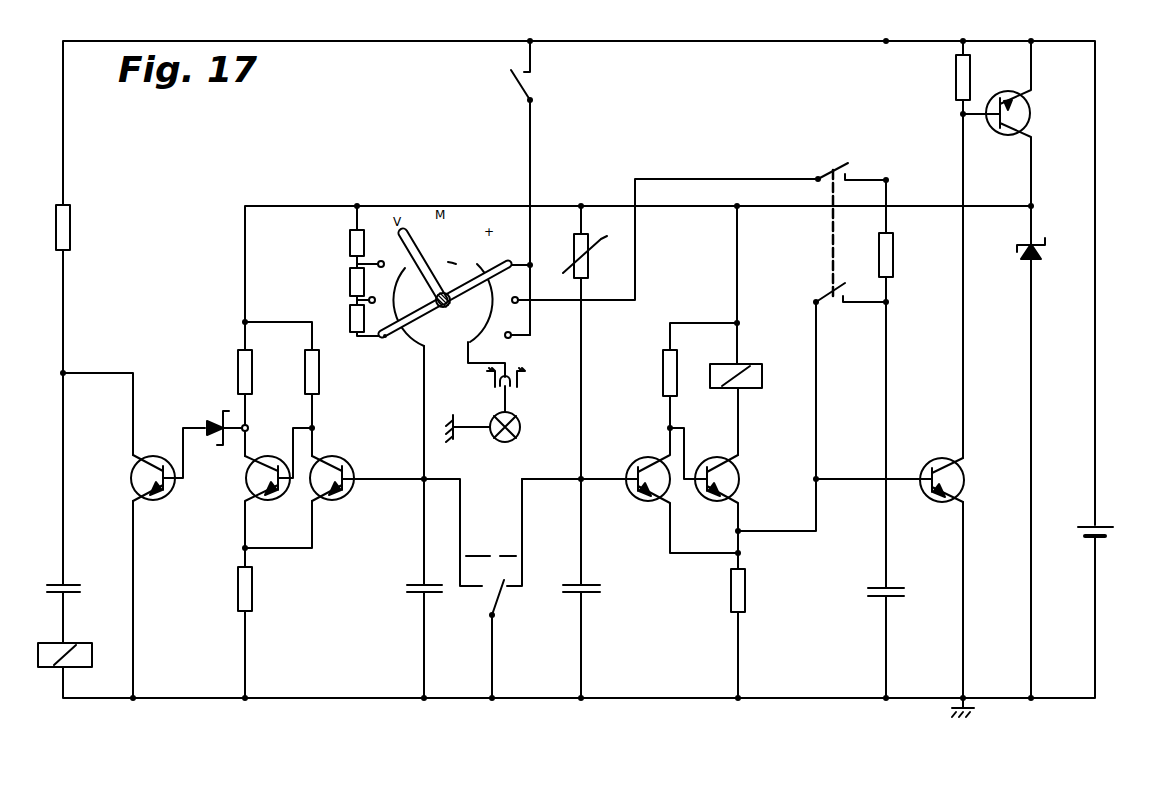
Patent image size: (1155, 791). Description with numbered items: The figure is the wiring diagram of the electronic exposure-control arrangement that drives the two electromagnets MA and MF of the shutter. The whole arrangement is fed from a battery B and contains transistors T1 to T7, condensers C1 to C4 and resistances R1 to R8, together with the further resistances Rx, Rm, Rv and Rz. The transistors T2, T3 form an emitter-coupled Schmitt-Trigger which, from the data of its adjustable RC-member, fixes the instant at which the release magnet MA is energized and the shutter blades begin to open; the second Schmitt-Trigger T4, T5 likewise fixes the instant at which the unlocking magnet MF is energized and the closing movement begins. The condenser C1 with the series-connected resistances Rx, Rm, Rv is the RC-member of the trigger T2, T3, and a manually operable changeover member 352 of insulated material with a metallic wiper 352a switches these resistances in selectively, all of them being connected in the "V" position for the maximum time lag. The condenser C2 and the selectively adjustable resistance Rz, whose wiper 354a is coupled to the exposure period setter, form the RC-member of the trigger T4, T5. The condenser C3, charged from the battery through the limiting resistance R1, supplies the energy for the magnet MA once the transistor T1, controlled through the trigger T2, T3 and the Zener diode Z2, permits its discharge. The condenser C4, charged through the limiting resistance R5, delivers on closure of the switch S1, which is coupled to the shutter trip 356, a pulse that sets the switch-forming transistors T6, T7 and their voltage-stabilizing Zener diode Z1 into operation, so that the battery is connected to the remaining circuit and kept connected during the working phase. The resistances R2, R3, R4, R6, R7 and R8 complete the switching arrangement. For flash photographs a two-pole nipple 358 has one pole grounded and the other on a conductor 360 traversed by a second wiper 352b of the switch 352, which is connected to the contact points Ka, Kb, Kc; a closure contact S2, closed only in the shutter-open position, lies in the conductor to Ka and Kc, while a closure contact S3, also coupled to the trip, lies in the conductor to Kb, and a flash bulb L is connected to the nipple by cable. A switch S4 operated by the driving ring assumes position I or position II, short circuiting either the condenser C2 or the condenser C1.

The limiting resistance R1 is at (72, 232).
The resistance R2 is at (238, 362).
The resistance R3 is at (319, 378).
The resistance R4 is at (662, 378).
The limiting resistance R5 is at (894, 257).
The resistance R6 is at (252, 598).
The resistance R7 is at (745, 600).
The resistance R8 is at (956, 79).
The series-connected resistance Rx is at (350, 246).
The series-connected resistance Rm is at (350, 280).
The series-connected resistance Rv is at (350, 313).
The selectively adjustable resistance Rz is at (588, 268).
The condenser C1 is at (403, 591).
The condenser C2 is at (596, 593).
The condenser C3 is at (78, 592).
The condenser C4 is at (892, 592).
The transistor T1 is at (130, 481).
The transistor T2 is at (245, 481).
The transistor T3 is at (351, 497).
The transistor T4 is at (630, 497).
The transistor T5 is at (735, 487).
The transistor T6 is at (958, 473).
The transistor T7 is at (1031, 118).
The voltage-stabilizing Zener diode Z1 is at (1043, 240).
The Zener diode Z2 is at (213, 420).
The switch S1 is at (832, 318).
The closure contact S2 is at (510, 90).
The closure contact S3 is at (822, 177).
The switch S4 is at (500, 604).
The release magnet MA is at (92, 655).
The unlocking magnet MF is at (757, 386).
The flash bulb L is at (518, 431).
The battery B is at (1100, 528).
The changeover member 352 is at (428, 236).
The metallic wiper 352a is at (392, 342).
The second wiper 352b is at (437, 266).
The wiper 354a is at (567, 250).
The shutter trip 356 is at (828, 255).
The two-pole nipple 358 is at (519, 384).
The conductor 360 is at (480, 320).
The contact point Ka is at (518, 249).
The contact point Kb is at (663, 241).
The contact point Kc is at (517, 324).
The switch position I is at (508, 568).
The switch position II is at (478, 568).